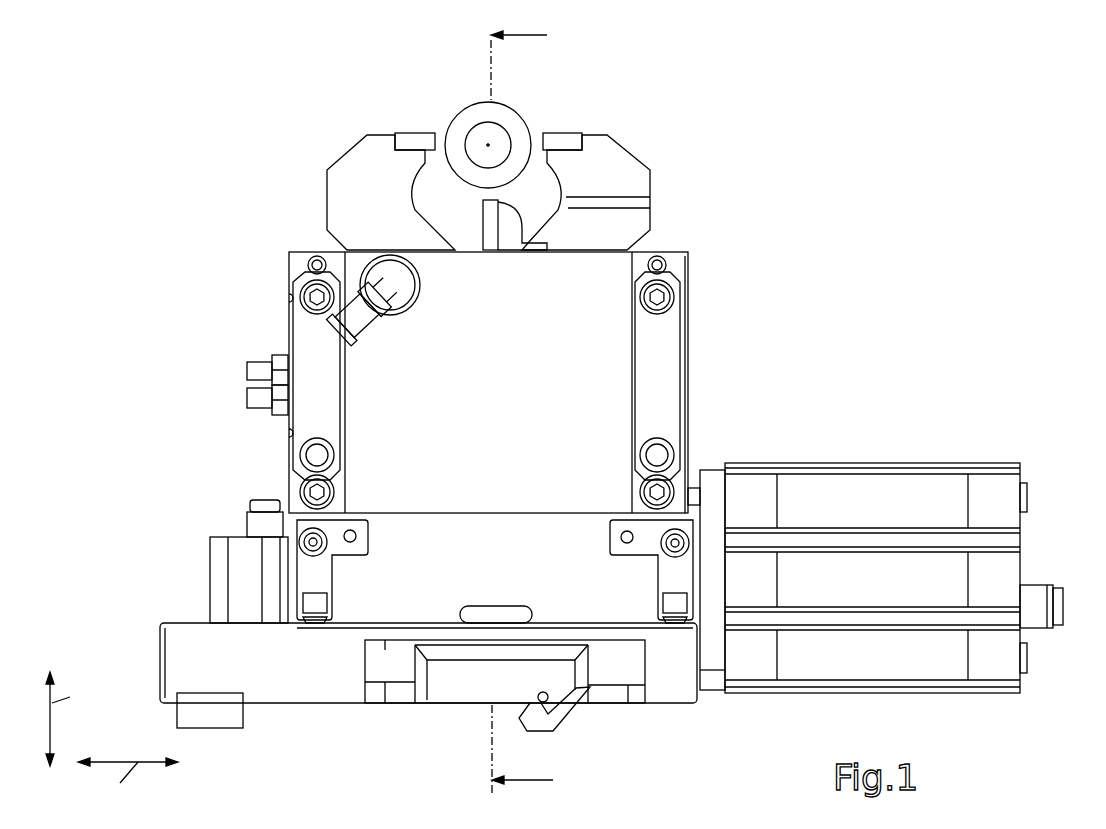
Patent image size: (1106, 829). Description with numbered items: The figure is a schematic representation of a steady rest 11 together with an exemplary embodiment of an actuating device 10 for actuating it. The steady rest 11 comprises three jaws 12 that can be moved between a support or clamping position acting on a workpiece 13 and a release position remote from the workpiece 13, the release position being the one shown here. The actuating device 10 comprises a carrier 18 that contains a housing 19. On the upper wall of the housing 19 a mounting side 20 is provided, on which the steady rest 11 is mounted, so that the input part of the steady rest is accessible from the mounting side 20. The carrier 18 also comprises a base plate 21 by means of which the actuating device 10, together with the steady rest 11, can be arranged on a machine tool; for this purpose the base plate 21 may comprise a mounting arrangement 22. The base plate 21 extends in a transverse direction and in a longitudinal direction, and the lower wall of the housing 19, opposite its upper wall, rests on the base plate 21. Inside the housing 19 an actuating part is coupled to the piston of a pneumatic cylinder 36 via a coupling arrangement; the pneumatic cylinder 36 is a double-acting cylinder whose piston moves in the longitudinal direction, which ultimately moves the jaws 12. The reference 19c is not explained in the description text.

The actuating device 10 is at (937, 367).
The steady rest 11 is at (738, 213).
The jaws 12 is at (417, 133).
The workpiece 13 is at (507, 117).
The carrier 18 is at (173, 535).
The housing 19 is at (293, 523).
The connection block 19c is at (372, 592).
The mounting side 20 is at (476, 513).
The base plate 21 is at (170, 665).
The mounting arrangement 22 is at (443, 708).
The pneumatic cylinder 36 is at (862, 467).